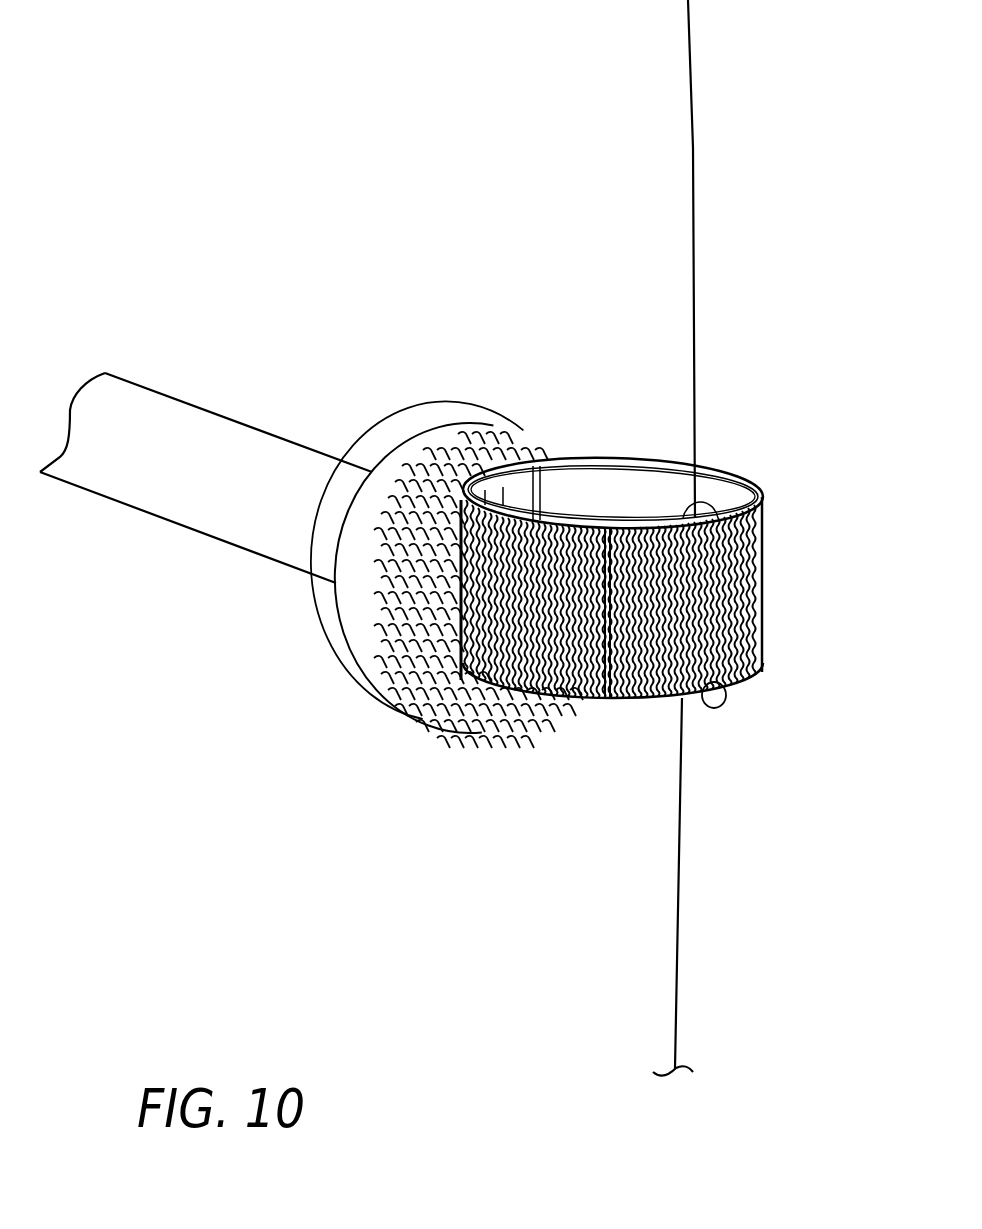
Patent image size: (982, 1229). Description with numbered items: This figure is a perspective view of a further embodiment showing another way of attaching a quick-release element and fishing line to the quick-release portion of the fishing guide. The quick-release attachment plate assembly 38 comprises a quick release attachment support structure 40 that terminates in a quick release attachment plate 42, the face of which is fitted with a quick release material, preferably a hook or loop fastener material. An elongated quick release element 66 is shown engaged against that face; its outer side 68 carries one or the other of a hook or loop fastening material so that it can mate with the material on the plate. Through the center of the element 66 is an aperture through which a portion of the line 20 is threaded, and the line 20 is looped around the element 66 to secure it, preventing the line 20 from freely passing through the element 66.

The line 20 is at (693, 148).
The quick-release attachment plate assembly 38 is at (296, 654).
The quick release attachment support structure 40 is at (200, 407).
The quick release attachment plate 42 is at (438, 427).
The elongated quick release element 66 is at (777, 498).
The outer side 68 is at (765, 637).